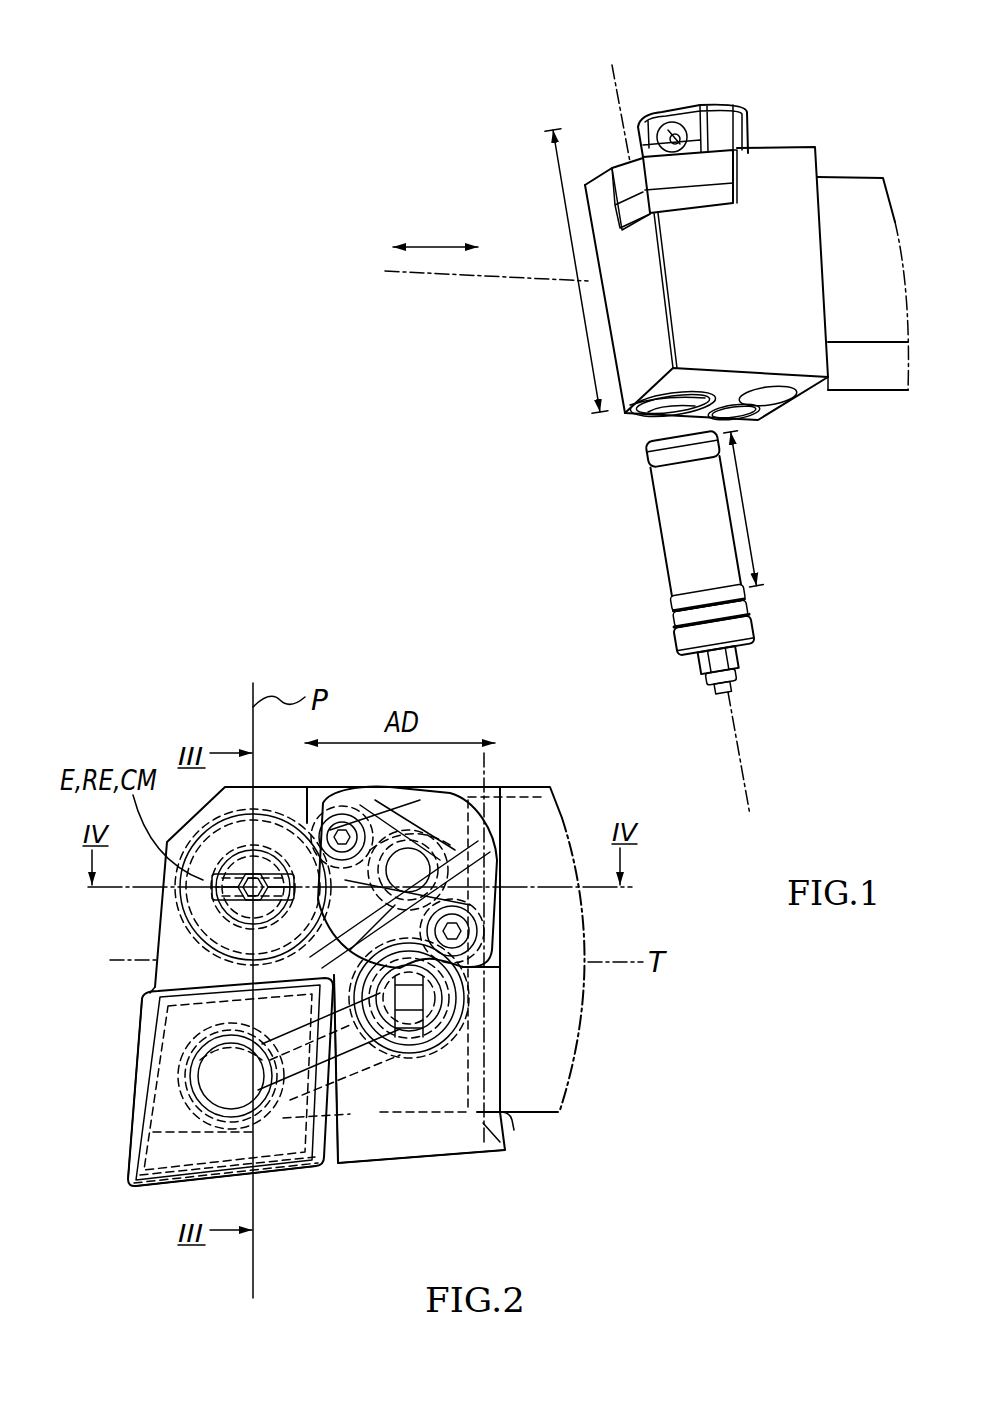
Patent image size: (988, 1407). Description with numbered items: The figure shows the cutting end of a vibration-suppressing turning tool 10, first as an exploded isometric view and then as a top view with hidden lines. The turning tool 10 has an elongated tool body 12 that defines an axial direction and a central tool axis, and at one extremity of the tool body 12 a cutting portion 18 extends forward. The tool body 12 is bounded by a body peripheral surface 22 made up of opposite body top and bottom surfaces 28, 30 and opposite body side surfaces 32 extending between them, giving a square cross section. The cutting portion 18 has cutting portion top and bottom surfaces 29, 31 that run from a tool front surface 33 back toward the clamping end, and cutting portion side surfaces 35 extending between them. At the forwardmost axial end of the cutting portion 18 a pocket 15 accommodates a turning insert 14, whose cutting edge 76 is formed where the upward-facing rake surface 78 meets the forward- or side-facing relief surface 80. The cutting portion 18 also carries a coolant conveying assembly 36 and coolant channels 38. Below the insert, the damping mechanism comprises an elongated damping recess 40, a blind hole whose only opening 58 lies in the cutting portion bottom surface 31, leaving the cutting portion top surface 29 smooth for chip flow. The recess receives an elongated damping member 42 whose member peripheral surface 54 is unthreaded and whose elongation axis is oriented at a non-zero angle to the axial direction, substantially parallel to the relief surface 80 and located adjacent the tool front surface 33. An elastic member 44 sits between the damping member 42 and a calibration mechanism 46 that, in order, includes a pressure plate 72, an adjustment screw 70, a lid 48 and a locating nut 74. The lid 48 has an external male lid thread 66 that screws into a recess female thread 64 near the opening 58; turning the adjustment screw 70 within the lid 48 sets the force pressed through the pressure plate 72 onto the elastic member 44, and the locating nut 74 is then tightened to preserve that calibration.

In FIG. 1, the turning tool 10 is at (478, 128).
In FIG. 1, the tool body 12 is at (855, 148).
In FIG. 1, the turning insert 14 is at (706, 167).
In FIG. 2, the turning insert 14 is at (121, 1089).
In FIG. 1, the pocket 15 is at (585, 159).
In FIG. 2, the pocket 15 is at (198, 1067).
In FIG. 1, the cutting portion 18 is at (688, 88).
In FIG. 2, the cutting portion 18 is at (372, 1179).
In FIG. 1, the body peripheral surface 22 is at (867, 247).
In FIG. 2, the body top surface 28 is at (548, 1038).
In FIG. 2, the cutting portion top surface 29 is at (442, 1143).
In FIG. 1, the body bottom surface 30 is at (873, 378).
In FIG. 1, the cutting portion bottom surface 31 is at (803, 385).
In FIG. 1, the body side surface 32 is at (838, 193).
In FIG. 2, the body side surface 32 is at (538, 1113).
In FIG. 1, the tool front surface 33 is at (624, 316).
In FIG. 2, the tool front surface 33 is at (157, 945).
In FIG. 1, the cutting portion side surface 35 is at (803, 347).
In FIG. 1, the coolant conveying assembly 36 is at (738, 93).
In FIG. 1, the coolant channel 38 is at (731, 413).
In FIG. 1, the damping recess 40 is at (650, 410).
In FIG. 1, the damping member 42 is at (641, 526).
In FIG. 1, the elastic member 44 is at (655, 452).
In FIG. 1, the calibration mechanism 46 is at (784, 621).
In FIG. 1, the lid 48 is at (687, 662).
In FIG. 1, the member peripheral surface 54 is at (672, 507).
In FIG. 1, the opening 58 is at (697, 400).
In FIG. 1, the recess female thread 64 is at (640, 414).
In FIG. 1, the male lid thread 66 is at (682, 642).
In FIG. 1, the adjustment screw 70 is at (737, 685).
In FIG. 1, the pressure plate 72 is at (678, 620).
In FIG. 1, the locating nut 74 is at (745, 660).
In FIG. 2, the cutting edge 76 is at (128, 1155).
In FIG. 2, the rake surface 78 is at (160, 1075).
In FIG. 1, the relief surface 80 is at (627, 185).